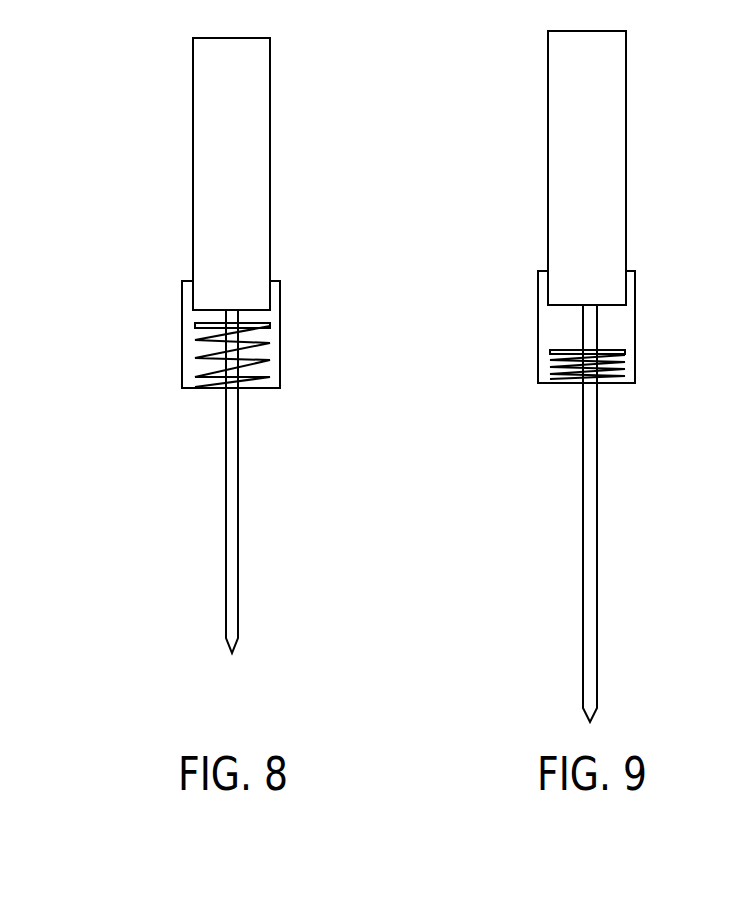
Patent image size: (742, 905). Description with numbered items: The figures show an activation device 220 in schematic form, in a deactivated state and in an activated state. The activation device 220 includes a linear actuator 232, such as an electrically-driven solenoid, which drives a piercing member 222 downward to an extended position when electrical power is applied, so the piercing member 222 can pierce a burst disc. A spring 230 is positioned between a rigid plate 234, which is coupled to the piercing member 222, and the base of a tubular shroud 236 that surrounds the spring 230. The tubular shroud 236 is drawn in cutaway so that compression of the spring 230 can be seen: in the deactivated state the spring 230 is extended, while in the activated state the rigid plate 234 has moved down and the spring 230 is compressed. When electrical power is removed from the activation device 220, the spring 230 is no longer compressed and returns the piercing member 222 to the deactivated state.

In FIG. 8, the activation device 220 is at (282, 45).
In FIG. 9, the activation device 220 is at (638, 81).
In FIG. 8, the piercing member 222 is at (214, 463).
In FIG. 9, the piercing member 222 is at (571, 481).
In FIG. 8, the spring 230 is at (184, 357).
In FIG. 9, the spring 230 is at (539, 374).
In FIG. 8, the linear actuator 232 is at (182, 119).
In FIG. 8, the rigid plate 234 is at (183, 322).
In FIG. 9, the rigid plate 234 is at (538, 349).
In FIG. 8, the tubular shroud 236 is at (172, 286).
In FIG. 9, the tubular shroud 236 is at (526, 300).